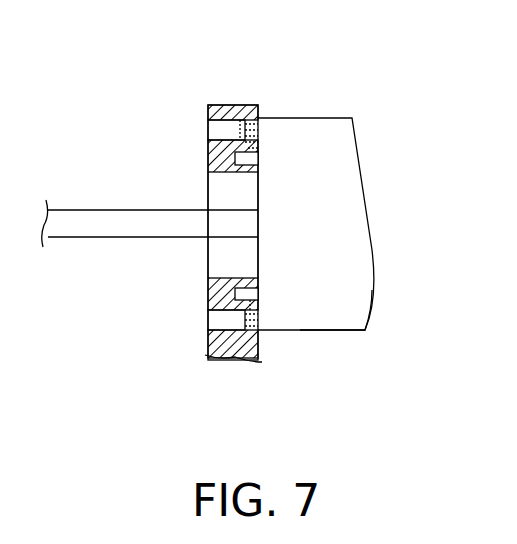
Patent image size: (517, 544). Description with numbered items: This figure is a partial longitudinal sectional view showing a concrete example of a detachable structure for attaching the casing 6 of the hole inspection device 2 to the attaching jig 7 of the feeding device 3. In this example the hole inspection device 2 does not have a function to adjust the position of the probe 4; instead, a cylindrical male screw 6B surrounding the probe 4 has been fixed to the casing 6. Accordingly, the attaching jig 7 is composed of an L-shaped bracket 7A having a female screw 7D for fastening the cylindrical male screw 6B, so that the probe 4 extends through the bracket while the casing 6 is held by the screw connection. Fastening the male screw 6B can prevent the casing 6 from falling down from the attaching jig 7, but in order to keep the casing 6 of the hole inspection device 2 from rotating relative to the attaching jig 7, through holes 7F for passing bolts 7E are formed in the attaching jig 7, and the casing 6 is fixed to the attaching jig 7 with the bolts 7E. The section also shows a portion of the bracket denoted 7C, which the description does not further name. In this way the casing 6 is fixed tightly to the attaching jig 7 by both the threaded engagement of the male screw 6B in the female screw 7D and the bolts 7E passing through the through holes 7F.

The hole inspection device 2 is at (345, 116).
The feeding device 3 is at (230, 103).
The probe 4 is at (100, 220).
The casing 6 is at (347, 320).
The cylindrical male screw 6B is at (255, 156).
The attaching jig 7 is at (264, 348).
The L-shaped bracket 7A is at (208, 110).
The inner ring 7C is at (212, 252).
The female screw 7D is at (260, 294).
The bolts 7E is at (208, 128).
The through holes 7F is at (208, 322).